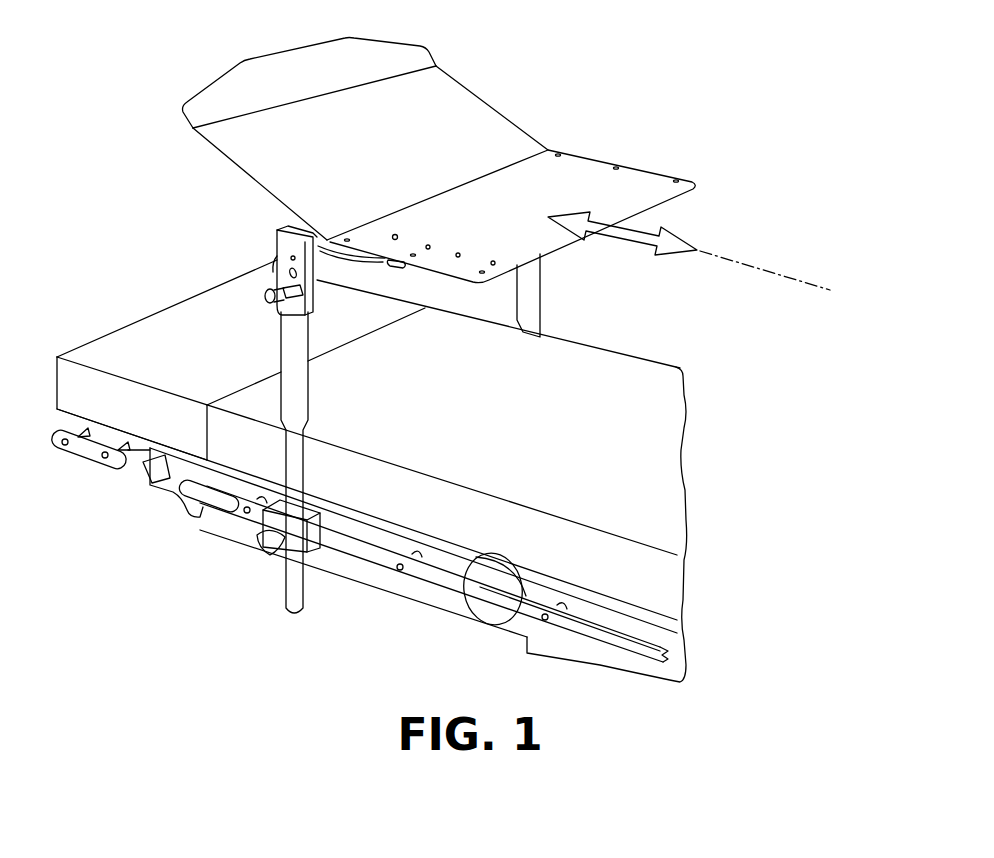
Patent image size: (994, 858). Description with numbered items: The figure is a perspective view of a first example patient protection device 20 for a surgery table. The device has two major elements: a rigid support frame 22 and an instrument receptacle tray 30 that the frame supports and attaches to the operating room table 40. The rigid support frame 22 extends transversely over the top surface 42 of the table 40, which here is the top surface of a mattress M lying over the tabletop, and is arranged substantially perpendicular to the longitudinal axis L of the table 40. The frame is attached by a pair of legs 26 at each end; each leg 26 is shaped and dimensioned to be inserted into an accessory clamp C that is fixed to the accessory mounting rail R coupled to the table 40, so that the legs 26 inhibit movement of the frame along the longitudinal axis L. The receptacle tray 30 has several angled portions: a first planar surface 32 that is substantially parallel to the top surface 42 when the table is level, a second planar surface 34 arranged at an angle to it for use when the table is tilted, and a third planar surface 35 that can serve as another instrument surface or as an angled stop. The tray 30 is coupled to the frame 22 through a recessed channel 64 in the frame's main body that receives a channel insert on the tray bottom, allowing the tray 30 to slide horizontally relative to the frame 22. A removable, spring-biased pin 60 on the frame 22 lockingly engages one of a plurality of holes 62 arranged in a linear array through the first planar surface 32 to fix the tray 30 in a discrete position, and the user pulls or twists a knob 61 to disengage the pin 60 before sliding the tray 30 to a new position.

The patient protection device 20 is at (523, 53).
The instrument receptacle tray 30 is at (493, 107).
The third planar surface 35 is at (288, 81).
The second planar surface 34 is at (352, 158).
The first planar surface 32 is at (506, 221).
The removable pin 60 is at (393, 235).
The plurality of holes 62 is at (492, 262).
The knob 61 is at (395, 268).
The recessed channel 64 is at (287, 223).
The legs 26 is at (288, 362).
The rigid support frame 22 is at (333, 250).
The top surface 42 is at (521, 432).
The operating room table 40 is at (405, 590).
The mattress M is at (118, 340).
The longitudinal axis L is at (728, 253).
The accessory mounting rail R is at (227, 503).
The accessory clamps C is at (312, 543).